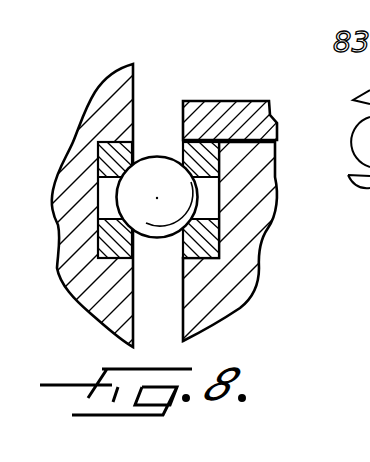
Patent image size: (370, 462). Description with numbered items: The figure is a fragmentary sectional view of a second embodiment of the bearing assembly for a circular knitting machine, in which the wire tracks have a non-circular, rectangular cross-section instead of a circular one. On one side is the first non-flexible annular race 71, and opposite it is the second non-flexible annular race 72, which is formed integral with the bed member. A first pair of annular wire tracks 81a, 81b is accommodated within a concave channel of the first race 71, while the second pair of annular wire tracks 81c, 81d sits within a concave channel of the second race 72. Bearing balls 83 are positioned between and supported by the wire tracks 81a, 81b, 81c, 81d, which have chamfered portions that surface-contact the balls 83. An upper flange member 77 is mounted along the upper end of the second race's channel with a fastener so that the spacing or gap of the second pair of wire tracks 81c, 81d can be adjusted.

The first non-flexible annular race 71 is at (68, 166).
The second non-flexible annular race 72 is at (258, 229).
The upper flange member 77 is at (218, 105).
The annular wire track 81a is at (98, 238).
The annular wire track 81b is at (98, 156).
The annular wire track 81c is at (220, 165).
The annular wire track 81d is at (212, 250).
The bearing balls 83 is at (155, 165).